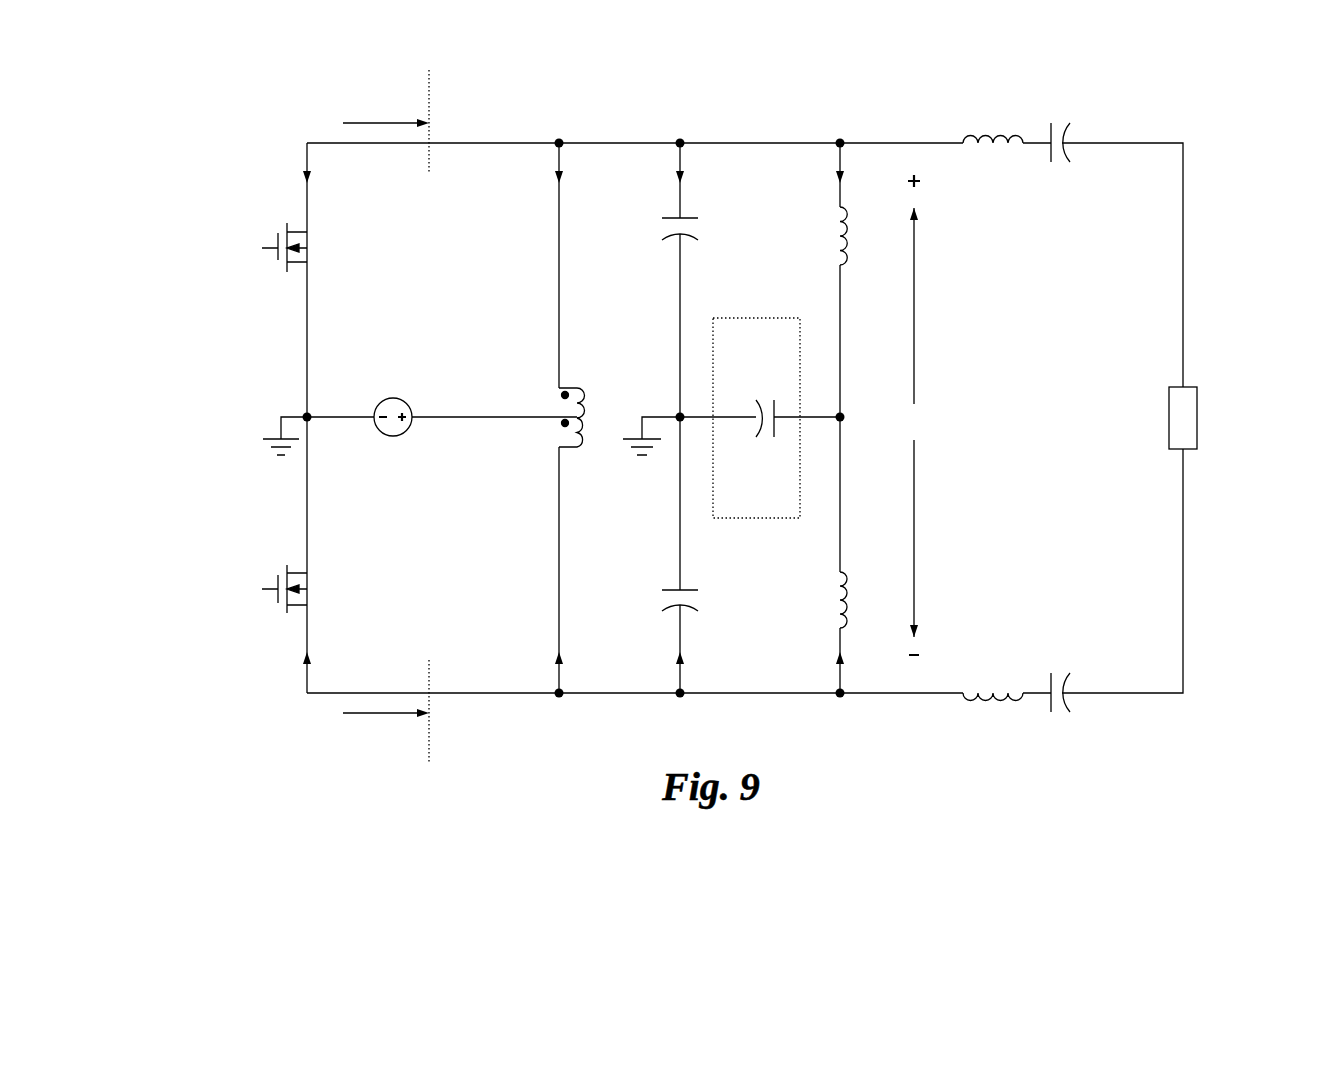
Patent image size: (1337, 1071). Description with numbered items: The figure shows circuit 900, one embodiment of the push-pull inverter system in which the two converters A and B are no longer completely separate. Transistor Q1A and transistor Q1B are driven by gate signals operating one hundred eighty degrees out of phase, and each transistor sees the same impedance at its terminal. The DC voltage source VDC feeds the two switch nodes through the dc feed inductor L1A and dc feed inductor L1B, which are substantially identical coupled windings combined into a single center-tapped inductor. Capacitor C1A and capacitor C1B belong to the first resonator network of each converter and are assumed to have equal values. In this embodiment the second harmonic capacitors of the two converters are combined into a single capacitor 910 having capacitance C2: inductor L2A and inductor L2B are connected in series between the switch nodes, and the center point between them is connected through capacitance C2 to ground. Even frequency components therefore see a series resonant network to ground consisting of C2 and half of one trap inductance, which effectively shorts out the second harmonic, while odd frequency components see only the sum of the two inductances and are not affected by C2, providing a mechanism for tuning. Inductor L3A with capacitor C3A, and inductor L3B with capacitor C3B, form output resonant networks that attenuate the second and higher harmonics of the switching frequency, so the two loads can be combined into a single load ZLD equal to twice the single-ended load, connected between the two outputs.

The circuit 900 is at (746, 416).
The single capacitor 910 is at (760, 436).
The transistor Q1A is at (313, 231).
The transistor Q1B is at (319, 615).
The DC voltage source VDC is at (384, 431).
The dc feed inductor L1A is at (546, 397).
The dc feed inductor L1B is at (545, 439).
The capacitor C1A is at (653, 233).
The capacitor C1B is at (653, 595).
The inductor L2A is at (821, 236).
The inductor L2B is at (821, 600).
The capacitance C2 is at (760, 397).
The inductor L3A is at (993, 161).
The inductor L3B is at (993, 676).
The capacitor C3A is at (1061, 163).
The capacitor C3B is at (1061, 670).
The load ZLD is at (1213, 433).